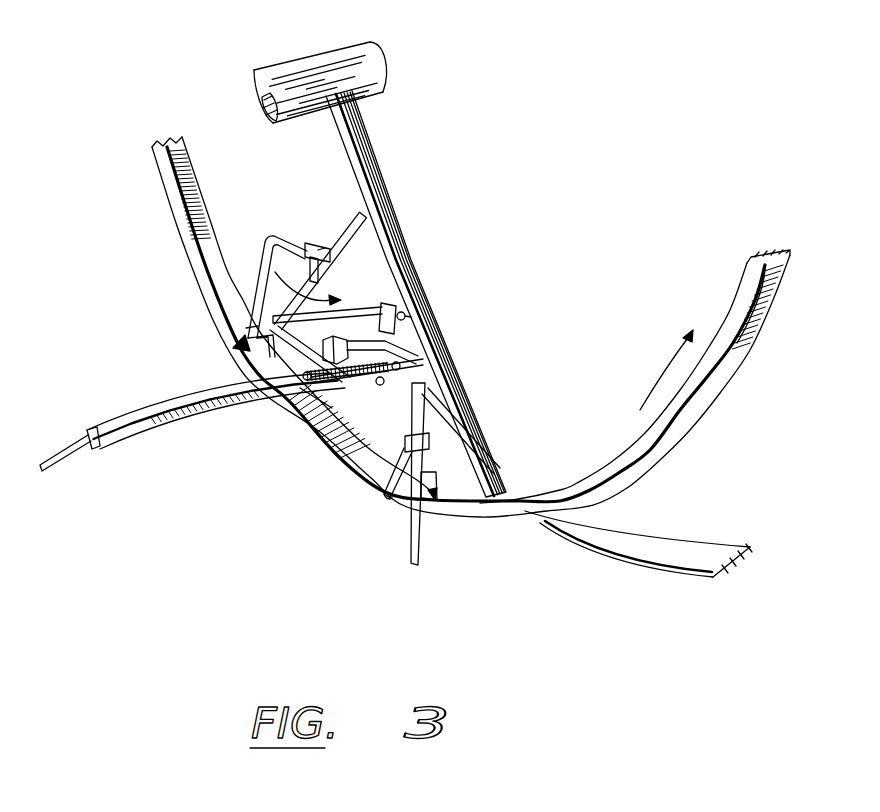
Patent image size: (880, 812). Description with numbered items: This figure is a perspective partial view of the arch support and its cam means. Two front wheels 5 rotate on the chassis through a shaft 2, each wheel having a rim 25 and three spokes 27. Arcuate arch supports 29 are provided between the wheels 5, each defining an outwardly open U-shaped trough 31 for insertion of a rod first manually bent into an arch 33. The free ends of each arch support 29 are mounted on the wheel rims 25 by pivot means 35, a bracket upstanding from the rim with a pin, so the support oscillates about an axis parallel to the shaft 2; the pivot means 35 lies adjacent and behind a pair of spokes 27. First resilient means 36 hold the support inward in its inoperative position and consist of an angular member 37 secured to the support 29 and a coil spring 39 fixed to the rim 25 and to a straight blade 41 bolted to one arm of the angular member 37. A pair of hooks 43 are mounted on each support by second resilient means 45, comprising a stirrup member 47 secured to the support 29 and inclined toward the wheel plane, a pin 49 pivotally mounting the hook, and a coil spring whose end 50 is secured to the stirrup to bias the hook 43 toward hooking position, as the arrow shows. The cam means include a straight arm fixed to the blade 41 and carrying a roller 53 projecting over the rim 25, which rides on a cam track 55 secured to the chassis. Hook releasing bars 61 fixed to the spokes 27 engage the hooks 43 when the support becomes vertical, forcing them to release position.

The shaft 2 is at (387, 53).
The front wheel 5 is at (397, 355).
The wheel rim 25 is at (750, 307).
The wheel spoke 27 is at (368, 182).
The arch support 29 is at (132, 430).
The U-shaped trough 31 is at (97, 447).
The arch 33 is at (60, 460).
The pivot means 35 is at (434, 503).
The first resilient means 36 is at (427, 392).
The angular member 37 is at (420, 418).
The coil spring 39 is at (340, 388).
The straight blade 41 is at (425, 372).
The hook 43 is at (340, 240).
The second resilient means 45 is at (283, 228).
The stirrup member 47 is at (246, 316).
The pin 49 is at (318, 248).
The coil spring end 50 is at (304, 243).
The roller 53 is at (325, 340).
The cam track 55 is at (700, 545).
The bar 61 is at (372, 315).